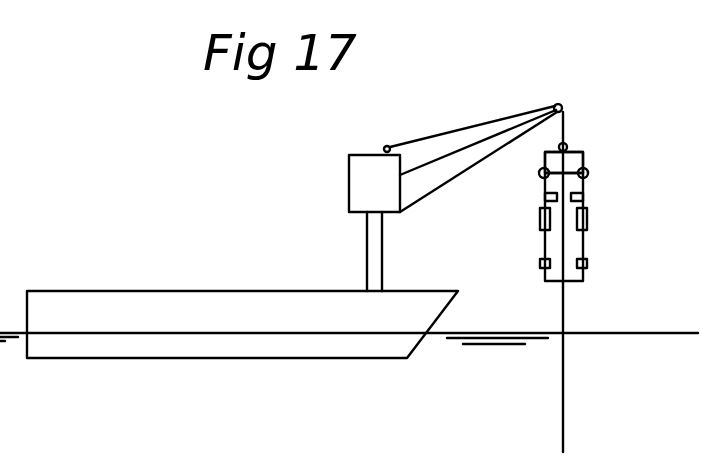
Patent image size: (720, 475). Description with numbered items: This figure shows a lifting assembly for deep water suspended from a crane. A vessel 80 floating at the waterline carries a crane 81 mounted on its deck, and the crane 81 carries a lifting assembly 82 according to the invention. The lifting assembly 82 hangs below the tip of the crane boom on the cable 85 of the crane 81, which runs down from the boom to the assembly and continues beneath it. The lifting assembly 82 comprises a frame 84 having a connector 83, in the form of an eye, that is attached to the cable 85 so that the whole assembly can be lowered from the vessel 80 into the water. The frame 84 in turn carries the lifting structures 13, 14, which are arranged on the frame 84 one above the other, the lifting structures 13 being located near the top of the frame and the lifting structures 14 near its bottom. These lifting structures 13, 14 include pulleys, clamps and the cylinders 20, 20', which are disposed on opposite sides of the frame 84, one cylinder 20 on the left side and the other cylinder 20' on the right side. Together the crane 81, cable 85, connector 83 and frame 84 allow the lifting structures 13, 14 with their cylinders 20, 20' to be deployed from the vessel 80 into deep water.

The vessel 80 is at (71, 307).
The crane 81 is at (357, 184).
The lifting assembly 82 is at (624, 175).
The connector (eye) 83 is at (578, 144).
The frame 84 is at (545, 157).
The cable 85 is at (565, 121).
The lifting structure 13 is at (596, 183).
The lifting structure 14 is at (601, 273).
The cylinder 20 is at (493, 238).
The cylinder 20' is at (634, 235).